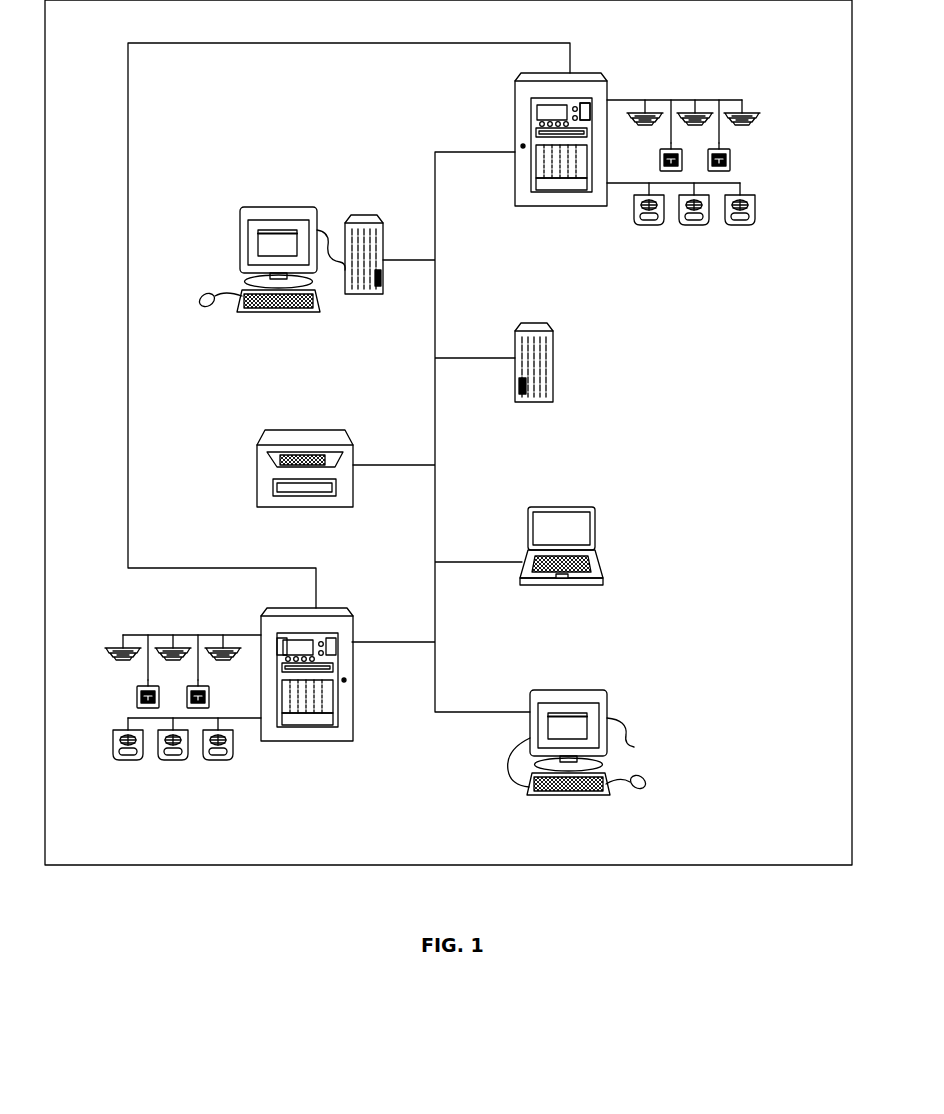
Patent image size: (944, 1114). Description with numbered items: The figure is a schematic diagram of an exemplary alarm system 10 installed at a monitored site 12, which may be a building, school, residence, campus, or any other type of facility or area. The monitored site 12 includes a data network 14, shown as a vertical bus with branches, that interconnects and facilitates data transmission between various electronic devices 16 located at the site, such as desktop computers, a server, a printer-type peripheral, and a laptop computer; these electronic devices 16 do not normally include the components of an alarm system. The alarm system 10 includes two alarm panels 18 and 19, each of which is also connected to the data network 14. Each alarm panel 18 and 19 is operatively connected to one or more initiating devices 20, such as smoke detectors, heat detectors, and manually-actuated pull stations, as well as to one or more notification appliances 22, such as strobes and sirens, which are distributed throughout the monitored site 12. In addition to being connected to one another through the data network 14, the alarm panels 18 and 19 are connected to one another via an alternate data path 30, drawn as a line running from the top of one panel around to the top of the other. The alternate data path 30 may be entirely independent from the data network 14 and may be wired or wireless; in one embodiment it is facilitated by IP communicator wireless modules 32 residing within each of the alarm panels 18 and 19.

The alarm system 10 is at (755, 50).
The monitored site 12 is at (816, 833).
The data network 14 is at (435, 418).
The electronic devices 16 is at (240, 226).
The alarm panel 18 is at (354, 722).
The alarm panel 19 is at (565, 206).
The initiating devices 20 is at (762, 151).
The notification appliances 22 is at (768, 219).
The alternate data path 30 is at (128, 112).
The IP communicator wireless modules 32 is at (583, 104).